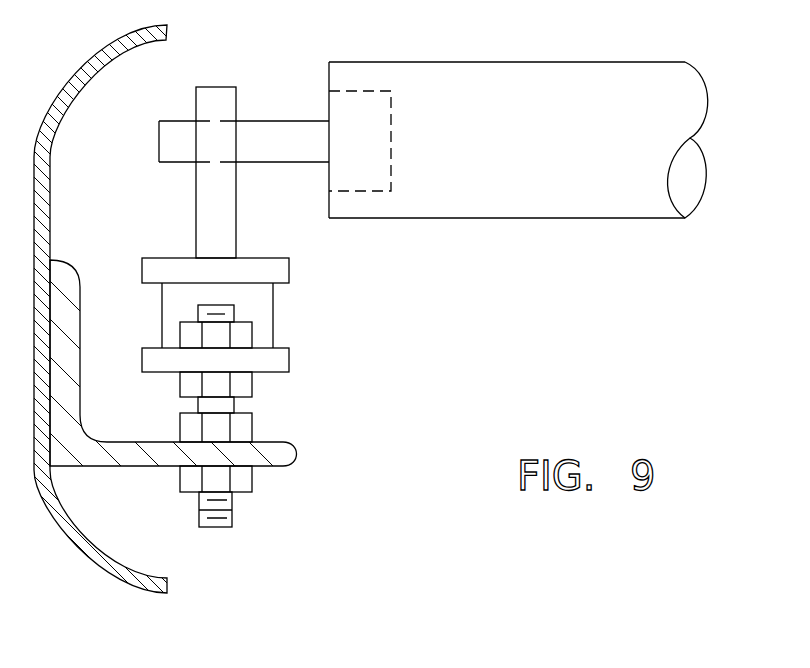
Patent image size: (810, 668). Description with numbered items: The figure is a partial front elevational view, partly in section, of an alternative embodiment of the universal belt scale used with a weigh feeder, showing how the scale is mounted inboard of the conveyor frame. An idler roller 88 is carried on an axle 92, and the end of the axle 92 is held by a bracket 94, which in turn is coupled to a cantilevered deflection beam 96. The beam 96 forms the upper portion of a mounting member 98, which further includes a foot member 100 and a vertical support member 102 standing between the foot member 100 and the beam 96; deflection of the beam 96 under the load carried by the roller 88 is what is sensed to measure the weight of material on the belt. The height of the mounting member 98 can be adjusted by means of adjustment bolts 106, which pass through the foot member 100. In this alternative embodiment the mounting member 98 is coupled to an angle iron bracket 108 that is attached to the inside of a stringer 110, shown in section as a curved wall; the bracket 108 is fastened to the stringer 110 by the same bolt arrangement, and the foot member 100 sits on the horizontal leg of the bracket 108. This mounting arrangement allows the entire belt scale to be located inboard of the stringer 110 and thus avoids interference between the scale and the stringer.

The idler roller 88 is at (506, 78).
The axle 92 is at (273, 140).
The bracket 94 is at (214, 97).
The cantilevered deflection beam 96 is at (275, 271).
The mounting member 98 is at (322, 306).
The foot member 100 is at (272, 363).
The vertical support member 102 is at (163, 335).
The adjustment bolts 106 is at (206, 406).
The angle iron bracket 108 is at (284, 458).
The stringer 110 is at (135, 582).